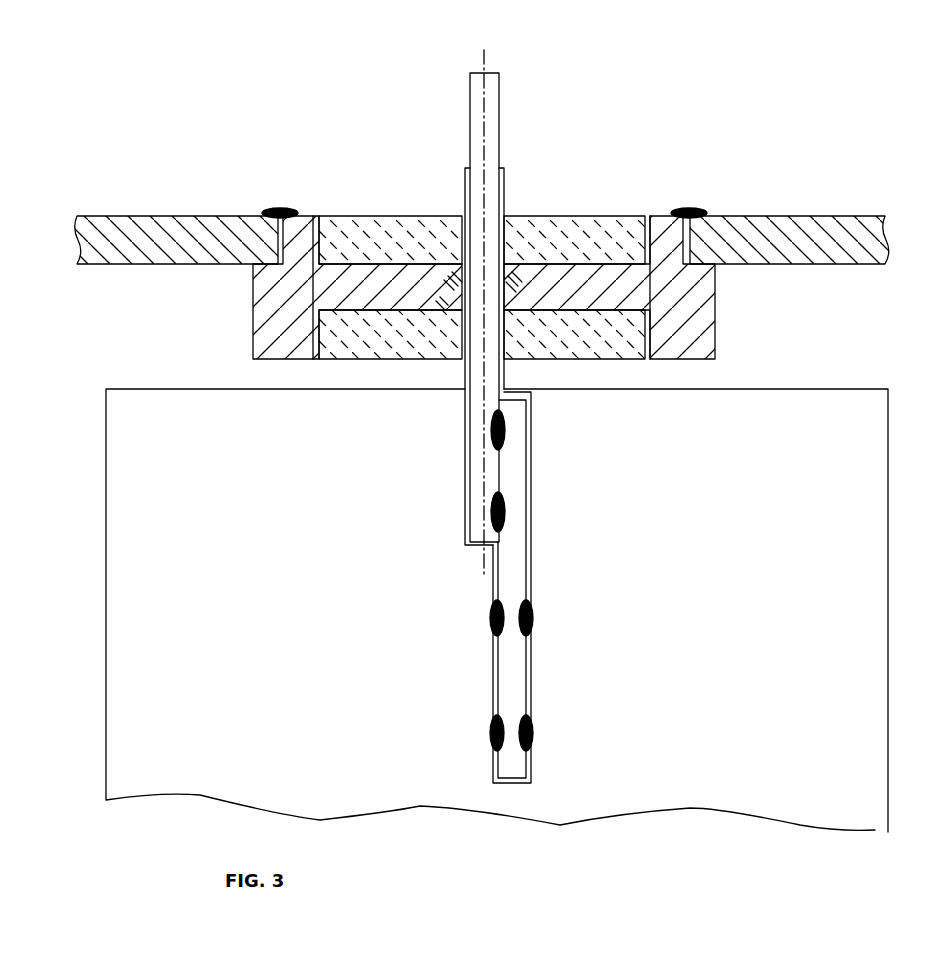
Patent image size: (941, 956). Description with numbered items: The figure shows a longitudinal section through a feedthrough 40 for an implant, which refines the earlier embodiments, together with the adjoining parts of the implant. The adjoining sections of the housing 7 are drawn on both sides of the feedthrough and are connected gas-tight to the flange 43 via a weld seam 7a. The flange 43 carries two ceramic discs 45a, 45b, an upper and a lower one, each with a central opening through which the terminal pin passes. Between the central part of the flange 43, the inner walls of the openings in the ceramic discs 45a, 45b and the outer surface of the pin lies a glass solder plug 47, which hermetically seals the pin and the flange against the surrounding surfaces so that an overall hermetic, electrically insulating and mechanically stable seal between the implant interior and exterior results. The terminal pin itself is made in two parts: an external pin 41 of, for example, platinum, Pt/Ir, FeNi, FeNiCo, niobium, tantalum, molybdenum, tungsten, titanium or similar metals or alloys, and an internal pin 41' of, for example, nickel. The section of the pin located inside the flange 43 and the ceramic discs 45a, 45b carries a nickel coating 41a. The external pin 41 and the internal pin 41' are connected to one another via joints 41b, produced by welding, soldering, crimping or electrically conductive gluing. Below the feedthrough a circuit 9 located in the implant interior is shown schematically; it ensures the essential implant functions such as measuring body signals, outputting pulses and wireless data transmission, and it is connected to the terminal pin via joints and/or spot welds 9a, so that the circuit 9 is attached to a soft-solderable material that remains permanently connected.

The feedthrough 40 is at (730, 97).
The external pin 41 is at (522, 307).
The nickel coating 41a is at (503, 177).
The joints 41b is at (505, 432).
The internal pin 41' is at (550, 587).
The flange 43 is at (715, 299).
The ceramic disc 45a is at (603, 216).
The ceramic disc 45b is at (604, 350).
The glass solder plug 47 is at (457, 297).
The housing 7 is at (793, 216).
The weld seam 7a is at (690, 216).
The circuit 9 is at (795, 393).
The joints and/or spot welds 9a is at (531, 620).